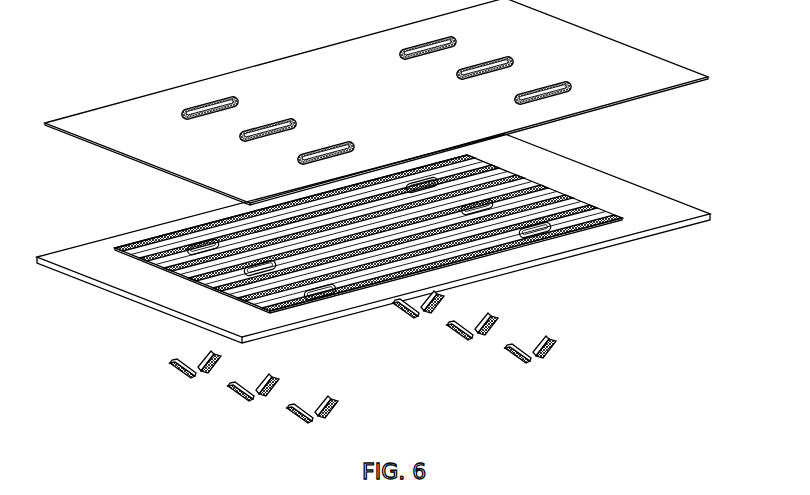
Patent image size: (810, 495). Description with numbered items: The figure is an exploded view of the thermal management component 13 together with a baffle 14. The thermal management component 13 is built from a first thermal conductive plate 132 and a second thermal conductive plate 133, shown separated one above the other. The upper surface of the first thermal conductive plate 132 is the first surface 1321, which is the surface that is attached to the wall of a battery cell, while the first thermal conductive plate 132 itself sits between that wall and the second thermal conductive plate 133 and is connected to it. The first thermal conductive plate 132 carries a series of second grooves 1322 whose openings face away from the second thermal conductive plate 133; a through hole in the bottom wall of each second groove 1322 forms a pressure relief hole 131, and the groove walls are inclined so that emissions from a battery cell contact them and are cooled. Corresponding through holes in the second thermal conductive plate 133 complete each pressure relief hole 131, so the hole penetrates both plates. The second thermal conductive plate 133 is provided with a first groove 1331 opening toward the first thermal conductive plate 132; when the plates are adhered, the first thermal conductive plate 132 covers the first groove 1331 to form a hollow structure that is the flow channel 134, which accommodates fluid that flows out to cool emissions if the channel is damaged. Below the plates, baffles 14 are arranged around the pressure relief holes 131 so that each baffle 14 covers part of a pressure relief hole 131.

The thermal management component 13 is at (391, 172).
The first thermal conductive plate 132 is at (376, 102).
The first surface 1321 is at (585, 50).
The second groove 1322 is at (516, 98).
The pressure relief hole 131 is at (551, 98).
The second thermal conductive plate 133 is at (373, 192).
The first groove 1331 is at (358, 249).
The flow channel 134 is at (247, 292).
The baffle 14 is at (548, 337).